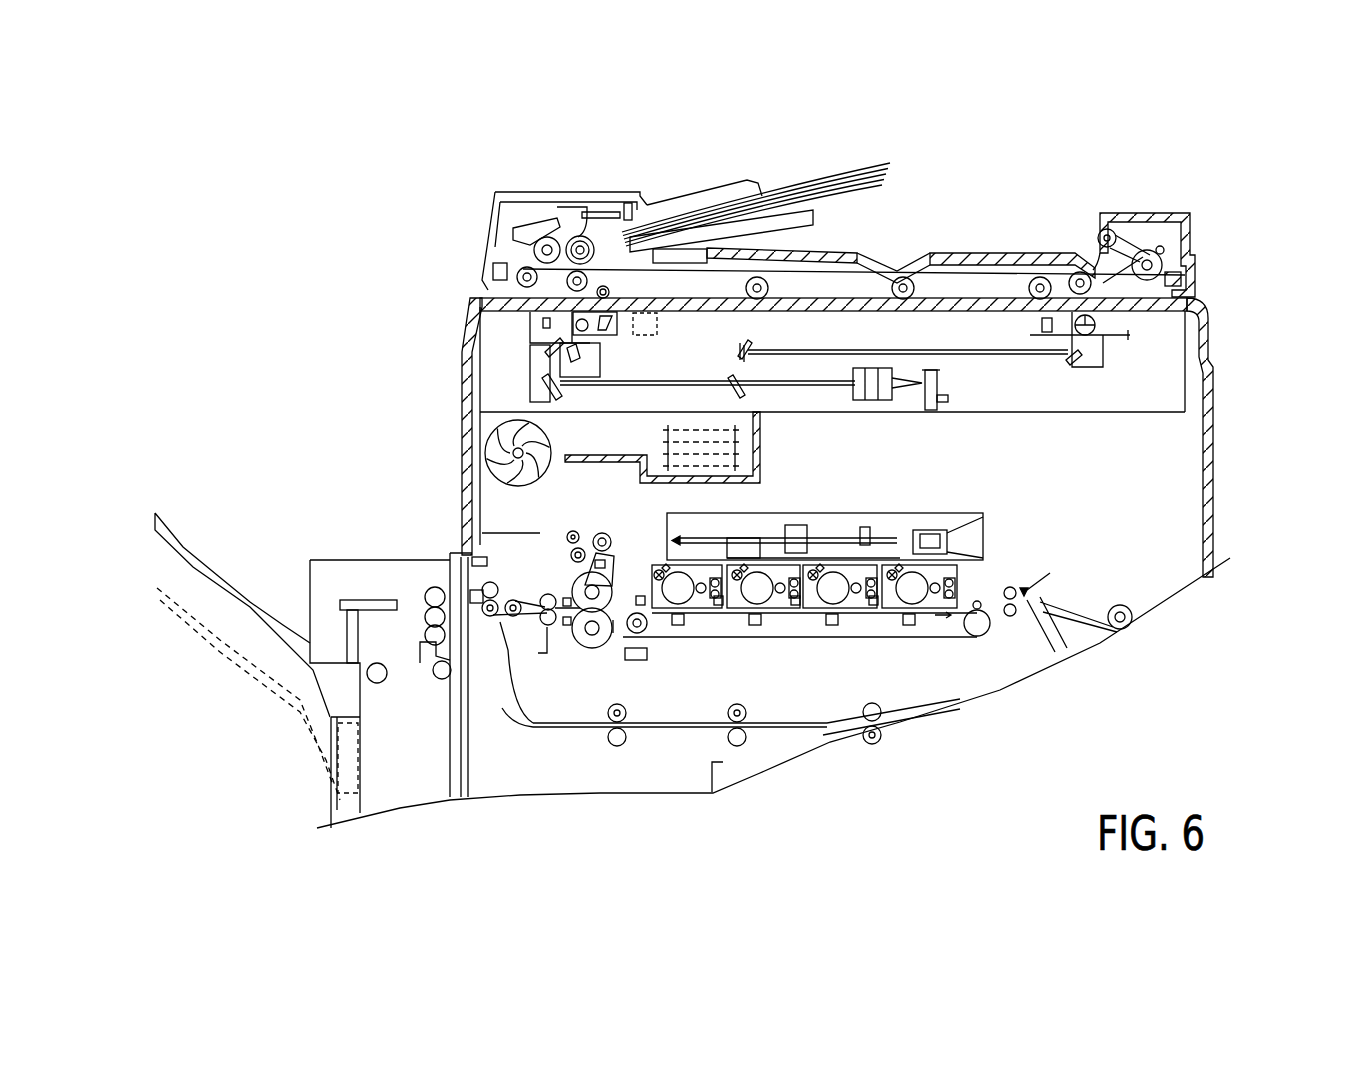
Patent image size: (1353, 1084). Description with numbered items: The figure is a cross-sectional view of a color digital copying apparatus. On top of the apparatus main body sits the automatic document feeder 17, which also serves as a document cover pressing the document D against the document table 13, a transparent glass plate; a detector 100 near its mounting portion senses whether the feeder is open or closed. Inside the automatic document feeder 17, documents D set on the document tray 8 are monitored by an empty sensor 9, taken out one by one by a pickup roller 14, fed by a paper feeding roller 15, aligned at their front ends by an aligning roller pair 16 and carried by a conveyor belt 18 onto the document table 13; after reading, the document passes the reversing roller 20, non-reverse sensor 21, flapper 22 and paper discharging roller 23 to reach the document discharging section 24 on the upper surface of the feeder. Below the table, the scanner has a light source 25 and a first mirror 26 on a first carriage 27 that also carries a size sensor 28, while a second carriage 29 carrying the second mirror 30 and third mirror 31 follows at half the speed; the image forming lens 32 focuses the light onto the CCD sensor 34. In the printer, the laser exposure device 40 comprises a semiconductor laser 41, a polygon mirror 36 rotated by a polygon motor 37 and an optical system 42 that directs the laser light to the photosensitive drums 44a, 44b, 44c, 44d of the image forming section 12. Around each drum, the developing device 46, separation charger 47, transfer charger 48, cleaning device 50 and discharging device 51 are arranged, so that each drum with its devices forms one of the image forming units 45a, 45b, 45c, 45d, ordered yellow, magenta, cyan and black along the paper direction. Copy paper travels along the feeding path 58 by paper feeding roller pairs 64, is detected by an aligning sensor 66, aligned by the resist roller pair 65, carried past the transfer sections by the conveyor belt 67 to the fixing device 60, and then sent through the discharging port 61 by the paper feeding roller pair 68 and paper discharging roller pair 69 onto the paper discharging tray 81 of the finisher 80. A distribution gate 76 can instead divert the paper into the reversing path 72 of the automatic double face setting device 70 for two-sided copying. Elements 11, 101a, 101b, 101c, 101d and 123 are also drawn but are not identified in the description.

The document tray 8 is at (723, 232).
The empty sensor 9 is at (623, 205).
The laser scanner unit 11 is at (828, 340).
The image forming section 12 is at (1190, 461).
The document table 13 is at (975, 296).
The pickup roller 14 is at (578, 240).
The paper feeding roller 15 is at (513, 246).
The aligning roller pair 16 is at (493, 278).
The automatic document feeder 17 is at (672, 188).
The conveyor belt 18 is at (862, 256).
The reversing roller 20 is at (1198, 262).
The non-reverse sensor 21 is at (1196, 288).
The flapper 22 is at (1130, 248).
The paper discharging roller 23 is at (1097, 236).
The document discharging section 24 is at (900, 262).
The light source 25 is at (625, 334).
The first mirror 26 is at (580, 356).
The first carriage 27 is at (570, 388).
The size sensor 28 is at (541, 324).
The second carriage 29 is at (543, 388).
The second mirror 30 is at (545, 356).
The third mirror 31 is at (557, 412).
The image forming lens 32 is at (878, 367).
The CCD sensor 34 is at (940, 382).
The polygon mirror 36 is at (983, 525).
The polygon motor 37 is at (975, 548).
The laser exposure device 40 is at (789, 518).
The semiconductor laser 41 is at (917, 528).
The optical system 42 is at (864, 525).
The photosensitive drum 44a is at (912, 604).
The photosensitive drum 44b is at (833, 604).
The photosensitive drum 44c is at (757, 604).
The photosensitive drum 44d is at (676, 604).
The image forming unit 45a is at (950, 608).
The image forming unit 45b is at (885, 608).
The image forming unit 45c is at (802, 608).
The image forming unit 45d is at (712, 608).
The developing device 46 is at (957, 578).
The separation charger 47 is at (678, 620).
The transfer charger 48 is at (672, 625).
The cleaning device 50 is at (790, 560).
The discharging device 51 is at (808, 545).
The feeding path 58 is at (1050, 600).
The fixing device 60 is at (595, 650).
The discharging port 61 is at (463, 567).
The paper feeding roller pair 64 is at (1122, 605).
The resist roller pair 65 is at (1010, 588).
The aligning sensor 66 is at (1027, 588).
The conveyor belt 67 is at (733, 706).
The paper feeding roller pair 68 is at (551, 637).
The paper discharging roller pair 69 is at (496, 583).
The automatic double face setting device 70 is at (555, 745).
The reversing path 72 is at (588, 740).
The distribution gate 76 is at (517, 598).
The finisher 80 is at (310, 597).
The paper discharging tray 81 is at (202, 553).
The detector 100 is at (658, 326).
The conveying roller 101a is at (881, 733).
The conveying roller 101b is at (863, 713).
The conveying roller 101c is at (746, 714).
The conveying roller 101d is at (627, 714).
The cooling fan 123 is at (547, 477).
The document D is at (828, 170).